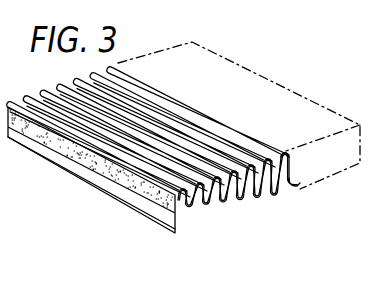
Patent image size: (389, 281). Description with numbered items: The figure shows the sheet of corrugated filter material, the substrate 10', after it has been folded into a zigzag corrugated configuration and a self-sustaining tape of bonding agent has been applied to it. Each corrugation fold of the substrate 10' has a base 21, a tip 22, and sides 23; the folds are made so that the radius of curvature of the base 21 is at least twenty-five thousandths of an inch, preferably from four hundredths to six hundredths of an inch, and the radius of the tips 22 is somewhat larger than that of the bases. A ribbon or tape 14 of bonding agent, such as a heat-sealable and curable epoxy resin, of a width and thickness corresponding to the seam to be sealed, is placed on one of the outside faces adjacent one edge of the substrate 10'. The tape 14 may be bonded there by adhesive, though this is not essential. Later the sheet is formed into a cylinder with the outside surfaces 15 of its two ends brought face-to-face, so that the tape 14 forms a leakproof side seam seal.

The corrugated substrate 10' is at (144, 132).
The ribbon or tape of bonding agent 14 is at (122, 193).
The outside surfaces 15 is at (160, 213).
The base 21 is at (221, 212).
The tip 22 is at (285, 151).
The sides 23 is at (297, 182).